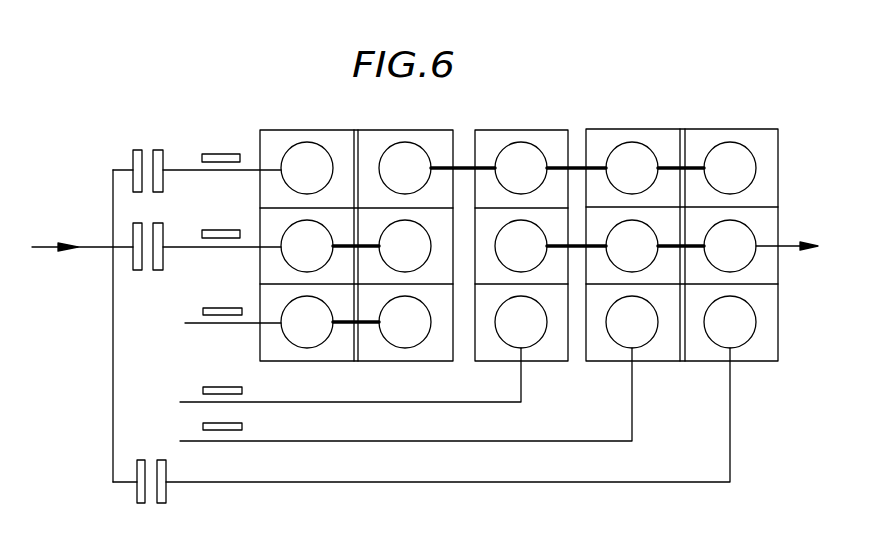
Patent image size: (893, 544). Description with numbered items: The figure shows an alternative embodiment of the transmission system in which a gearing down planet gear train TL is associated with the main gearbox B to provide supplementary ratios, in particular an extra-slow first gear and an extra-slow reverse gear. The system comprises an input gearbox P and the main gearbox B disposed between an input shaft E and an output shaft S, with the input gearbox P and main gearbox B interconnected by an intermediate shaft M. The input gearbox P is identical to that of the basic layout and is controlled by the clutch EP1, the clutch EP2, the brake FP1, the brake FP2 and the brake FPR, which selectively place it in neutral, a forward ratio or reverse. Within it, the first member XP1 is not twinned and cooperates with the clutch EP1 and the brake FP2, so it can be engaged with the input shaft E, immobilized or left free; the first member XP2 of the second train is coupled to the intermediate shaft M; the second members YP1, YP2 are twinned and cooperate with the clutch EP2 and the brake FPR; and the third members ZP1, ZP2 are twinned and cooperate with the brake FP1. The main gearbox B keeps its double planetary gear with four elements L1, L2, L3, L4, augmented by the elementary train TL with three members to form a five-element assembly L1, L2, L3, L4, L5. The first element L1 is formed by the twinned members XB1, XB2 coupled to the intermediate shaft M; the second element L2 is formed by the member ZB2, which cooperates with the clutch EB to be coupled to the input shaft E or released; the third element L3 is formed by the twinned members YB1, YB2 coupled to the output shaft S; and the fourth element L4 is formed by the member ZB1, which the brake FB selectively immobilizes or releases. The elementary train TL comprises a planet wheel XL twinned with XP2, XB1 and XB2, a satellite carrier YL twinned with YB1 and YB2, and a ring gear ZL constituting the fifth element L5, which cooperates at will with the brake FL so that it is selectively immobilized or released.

The input shaft E is at (56, 247).
The output shaft S is at (790, 244).
The input gearbox P is at (316, 120).
The gearing down planet gear train TL is at (521, 128).
The main gearbox B is at (690, 118).
The intermediate shaft M is at (460, 162).
The first element L1 is at (708, 152).
The second element L2 is at (757, 318).
The third element L3 is at (653, 254).
The fourth element L4 is at (622, 341).
The fifth element L5 is at (540, 340).
The clutch EP1 is at (197, 159).
The clutch EP2 is at (204, 237).
The clutch EB is at (421, 425).
The brake FP1 is at (233, 303).
The brake FP2 is at (221, 146).
The brake FPR is at (221, 221).
The brake FL is at (350, 375).
The brake FB is at (406, 394).
The first member of first input gearbox train XP1 is at (307, 168).
The first member of second input gearbox train XP2 is at (405, 168).
The planet wheel XL is at (521, 168).
The first member of first main gearbox train XB1 is at (632, 168).
The first member of second main gearbox train XB2 is at (730, 168).
The second member of first input gearbox train YP1 is at (307, 246).
The second member of second input gearbox train YP2 is at (405, 246).
The satellite carrier YL is at (521, 246).
The second member of first main gearbox train YB1 is at (632, 246).
The third member of second main gearbox train YB2 is at (730, 246).
The third member of first input gearbox train ZP1 is at (307, 322).
The third member of second input gearbox train ZP2 is at (405, 322).
The ring gear ZL is at (521, 322).
The third member of first main gearbox train ZB1 is at (632, 322).
The second member of second main gearbox train ZB2 is at (730, 322).